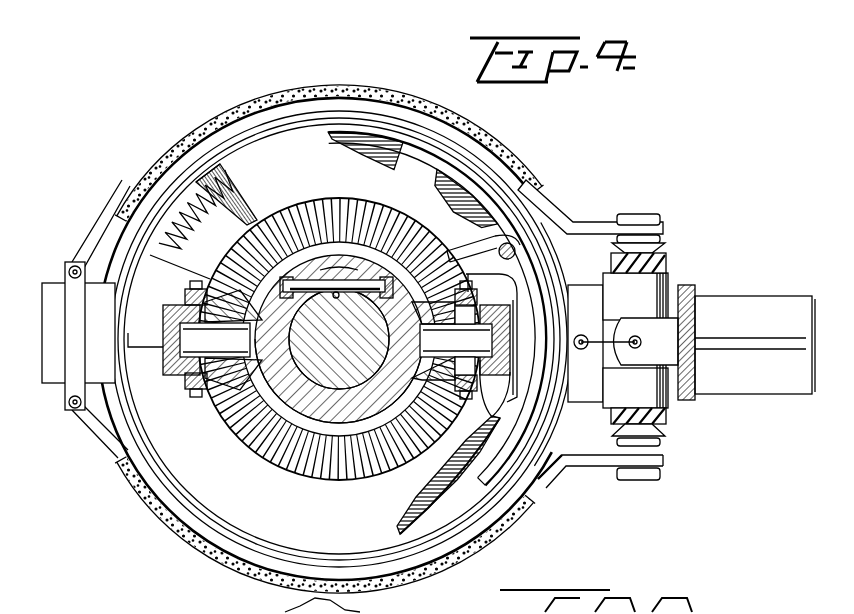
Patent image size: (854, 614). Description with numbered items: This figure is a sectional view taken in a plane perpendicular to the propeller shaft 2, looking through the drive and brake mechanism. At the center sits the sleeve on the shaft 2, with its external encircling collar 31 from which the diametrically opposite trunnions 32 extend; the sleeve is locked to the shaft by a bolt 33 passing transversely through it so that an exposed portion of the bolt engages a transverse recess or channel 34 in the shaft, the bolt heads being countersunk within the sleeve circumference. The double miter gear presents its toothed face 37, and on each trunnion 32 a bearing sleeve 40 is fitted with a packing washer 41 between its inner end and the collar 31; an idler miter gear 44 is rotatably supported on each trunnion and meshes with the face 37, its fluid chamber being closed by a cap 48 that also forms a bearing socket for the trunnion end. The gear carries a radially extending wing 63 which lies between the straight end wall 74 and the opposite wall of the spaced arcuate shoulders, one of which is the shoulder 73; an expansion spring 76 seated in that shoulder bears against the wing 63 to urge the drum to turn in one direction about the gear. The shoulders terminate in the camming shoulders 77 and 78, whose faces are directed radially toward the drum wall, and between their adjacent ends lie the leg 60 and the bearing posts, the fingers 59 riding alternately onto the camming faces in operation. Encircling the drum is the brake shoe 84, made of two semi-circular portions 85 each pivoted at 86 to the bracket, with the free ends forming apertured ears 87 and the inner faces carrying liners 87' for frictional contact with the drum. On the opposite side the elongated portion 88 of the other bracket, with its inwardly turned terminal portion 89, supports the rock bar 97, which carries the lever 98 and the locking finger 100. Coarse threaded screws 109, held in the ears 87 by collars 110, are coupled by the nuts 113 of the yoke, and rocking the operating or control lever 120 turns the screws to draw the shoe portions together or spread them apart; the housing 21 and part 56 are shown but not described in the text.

The propeller shaft 2 is at (343, 382).
The shaft housing 21 is at (770, 384).
The collar 31 is at (292, 422).
The trunnions 32 is at (197, 340).
The bolt 33 is at (335, 292).
The transverse recess or channel 34 is at (350, 254).
The toothed face 37 is at (381, 442).
The bearing sleeve 40 is at (502, 345).
The packing washer 41 is at (220, 404).
The idler miter gear 44 is at (240, 394).
The cap 48 is at (492, 310).
The housing joint 56 is at (514, 244).
The fingers 59 is at (425, 178).
The leg 60 is at (483, 255).
The wing 63 is at (184, 277).
The arcuate shoulder 73 is at (238, 180).
The straight end wall 74 is at (152, 348).
The expansion spring 76 is at (234, 186).
The camming shoulder 77 is at (442, 470).
The camming shoulder 78 is at (372, 160).
The brake shoe 84 is at (196, 109).
The semi-circular portions 85 is at (278, 100).
The pivot 86 is at (73, 258).
The apertured ear 87 is at (411, 355).
The liner 87' is at (325, 313).
The elongated portion of bracket 88 is at (690, 286).
The inwardly turned terminal portion 89 is at (585, 343).
The rock bar 97 is at (582, 350).
The lever 98 is at (548, 196).
The locking finger 100 is at (645, 327).
The coarse threaded screw 109 is at (668, 256).
The collars 110 is at (661, 219).
The nuts 113 is at (635, 340).
The operating or control lever 120 is at (746, 340).